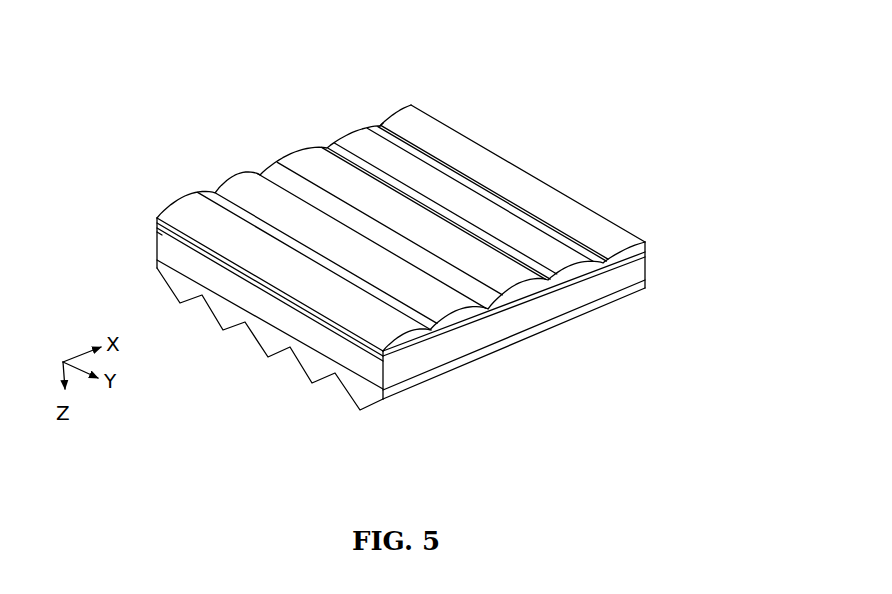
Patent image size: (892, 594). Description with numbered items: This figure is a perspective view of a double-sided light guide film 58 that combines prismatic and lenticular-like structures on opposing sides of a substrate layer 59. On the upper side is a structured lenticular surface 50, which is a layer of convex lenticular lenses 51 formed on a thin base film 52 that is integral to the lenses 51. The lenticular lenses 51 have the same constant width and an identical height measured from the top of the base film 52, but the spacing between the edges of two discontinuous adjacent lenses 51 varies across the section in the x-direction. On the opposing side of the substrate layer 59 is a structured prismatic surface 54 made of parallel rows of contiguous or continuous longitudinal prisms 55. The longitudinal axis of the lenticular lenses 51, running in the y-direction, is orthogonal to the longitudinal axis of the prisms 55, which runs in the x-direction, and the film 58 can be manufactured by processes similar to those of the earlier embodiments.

The structured lenticular surface 50 is at (648, 240).
The lenticular lenses 51 is at (526, 185).
The base film 52 is at (494, 309).
The structured prismatic surface 54 is at (648, 284).
The longitudinal prisms 55 is at (315, 371).
The light guide film 58 is at (660, 151).
The substrate layer 59 is at (175, 252).